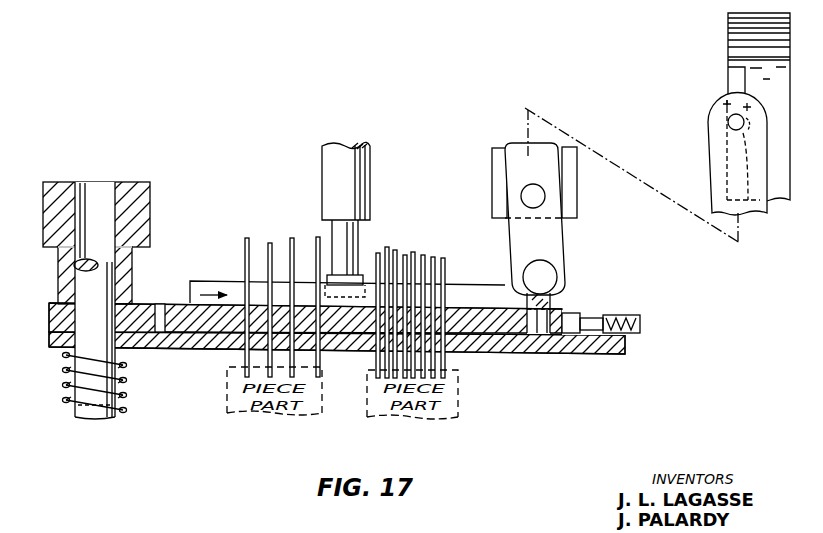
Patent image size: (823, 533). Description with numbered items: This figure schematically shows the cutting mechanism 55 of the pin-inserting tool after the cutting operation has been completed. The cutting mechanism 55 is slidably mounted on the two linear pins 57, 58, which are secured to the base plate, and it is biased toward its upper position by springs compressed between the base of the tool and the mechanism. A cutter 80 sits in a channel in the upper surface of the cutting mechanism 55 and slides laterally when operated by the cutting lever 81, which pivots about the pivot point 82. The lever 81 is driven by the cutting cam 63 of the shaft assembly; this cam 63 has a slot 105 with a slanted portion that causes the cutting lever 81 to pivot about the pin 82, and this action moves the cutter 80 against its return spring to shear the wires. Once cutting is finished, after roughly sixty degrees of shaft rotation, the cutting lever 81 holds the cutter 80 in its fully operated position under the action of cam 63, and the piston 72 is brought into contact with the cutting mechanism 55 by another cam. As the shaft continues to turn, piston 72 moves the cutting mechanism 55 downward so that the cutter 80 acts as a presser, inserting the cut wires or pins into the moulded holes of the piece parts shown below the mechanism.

The cutting mechanism 55 is at (160, 349).
The linear pin 57 is at (63, 365).
The linear pin 58 is at (70, 395).
The cutting cam 63 is at (727, 41).
The piston 72 is at (356, 190).
The cutter 80 is at (175, 310).
The cutting lever 81 is at (717, 143).
The pivot point 82 is at (533, 196).
The slot 105 is at (717, 104).